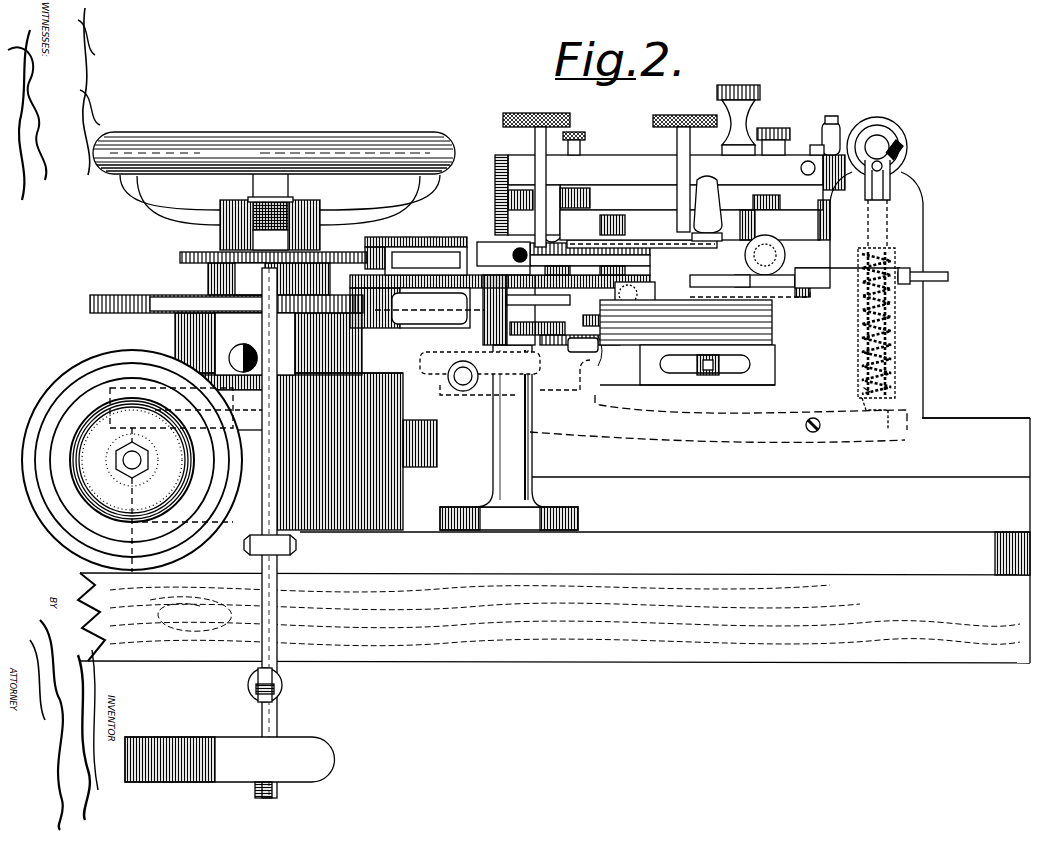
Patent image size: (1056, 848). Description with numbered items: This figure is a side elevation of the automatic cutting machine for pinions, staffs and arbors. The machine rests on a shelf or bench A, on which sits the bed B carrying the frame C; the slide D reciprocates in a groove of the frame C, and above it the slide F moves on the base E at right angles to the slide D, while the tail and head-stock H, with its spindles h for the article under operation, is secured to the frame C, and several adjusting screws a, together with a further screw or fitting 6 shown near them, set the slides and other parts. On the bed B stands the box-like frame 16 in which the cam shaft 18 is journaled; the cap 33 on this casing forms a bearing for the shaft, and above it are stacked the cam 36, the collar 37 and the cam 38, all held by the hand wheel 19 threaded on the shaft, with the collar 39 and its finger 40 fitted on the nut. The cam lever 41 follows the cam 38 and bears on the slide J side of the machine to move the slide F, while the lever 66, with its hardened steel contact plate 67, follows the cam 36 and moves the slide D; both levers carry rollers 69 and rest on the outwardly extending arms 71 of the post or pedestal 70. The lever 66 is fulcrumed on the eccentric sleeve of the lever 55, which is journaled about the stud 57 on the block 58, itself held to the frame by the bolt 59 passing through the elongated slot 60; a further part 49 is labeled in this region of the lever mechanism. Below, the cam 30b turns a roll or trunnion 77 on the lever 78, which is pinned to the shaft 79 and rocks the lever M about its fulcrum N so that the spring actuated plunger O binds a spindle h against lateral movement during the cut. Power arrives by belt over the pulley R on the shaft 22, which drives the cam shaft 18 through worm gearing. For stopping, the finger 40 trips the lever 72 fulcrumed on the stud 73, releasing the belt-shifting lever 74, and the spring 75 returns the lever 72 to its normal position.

The hand wheel 19 is at (394, 140).
The cam shaft 18 is at (290, 204).
The cam 38 is at (183, 254).
The collar 37 is at (208, 280).
The cam 36 is at (226, 293).
The collar 39 is at (175, 324).
The finger 40 is at (255, 352).
The cap 33 is at (232, 410).
The box-like frame 16 is at (312, 451).
The lever 72 is at (277, 515).
The stud 73 is at (290, 546).
The spring 75 is at (283, 690).
The lever 74 is at (230, 767).
The shaft 22 is at (132, 470).
The pulley R is at (62, 382).
The post or pedestal 70 is at (530, 465).
The cam lever 41 is at (410, 240).
The rollers 69 is at (365, 255).
The outwardly extending arms 71 is at (455, 318).
The slide J is at (492, 244).
The lever 55 is at (632, 268).
The roll or trunnion 77 is at (578, 320).
The lever 66 is at (642, 297).
The arm 49 is at (630, 347).
The lever 78 is at (469, 363).
The shaft 79 is at (463, 376).
The cam 30b is at (432, 392).
The lever M is at (718, 413).
The fulcrum N is at (824, 425).
The spring actuated plunger O is at (880, 405).
The slide F is at (670, 195).
The base E is at (695, 208).
The adjusting screws a is at (522, 115).
The screw 6 is at (820, 140).
The spindles h is at (888, 140).
The tail and head-stock H is at (912, 301).
The hardened steel contact plate 67 is at (808, 270).
The slide D is at (815, 294).
The stud 57 is at (686, 320).
The block 58 is at (721, 357).
The bolt 59 is at (706, 375).
The elongated slot 60 is at (735, 368).
The frame C is at (706, 377).
The bed B is at (665, 540).
The shelf, table, bench or other support A is at (554, 618).